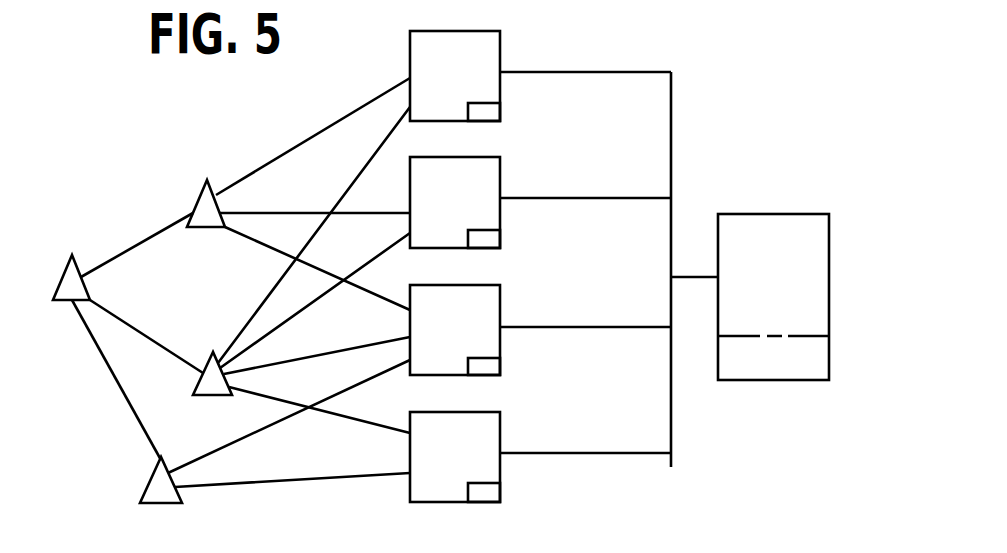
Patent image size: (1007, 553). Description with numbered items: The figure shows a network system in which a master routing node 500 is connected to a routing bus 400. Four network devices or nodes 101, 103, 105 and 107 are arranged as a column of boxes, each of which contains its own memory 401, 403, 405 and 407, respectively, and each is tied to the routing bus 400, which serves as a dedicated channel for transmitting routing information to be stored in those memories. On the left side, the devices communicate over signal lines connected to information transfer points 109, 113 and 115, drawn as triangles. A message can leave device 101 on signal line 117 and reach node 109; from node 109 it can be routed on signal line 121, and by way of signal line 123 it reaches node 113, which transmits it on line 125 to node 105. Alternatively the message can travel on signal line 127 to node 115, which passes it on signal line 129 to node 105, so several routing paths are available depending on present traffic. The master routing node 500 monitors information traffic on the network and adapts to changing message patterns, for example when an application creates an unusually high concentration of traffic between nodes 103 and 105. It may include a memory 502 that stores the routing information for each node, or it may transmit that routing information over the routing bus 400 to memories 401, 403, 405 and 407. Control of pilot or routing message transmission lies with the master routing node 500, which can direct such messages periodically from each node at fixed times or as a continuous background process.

The device 101 is at (490, 44).
The device 103 is at (490, 177).
The device 105 is at (490, 303).
The device 107 is at (490, 430).
The memory 401 is at (487, 112).
The memory 403 is at (487, 240).
The memory 405 is at (487, 367).
The memory 407 is at (487, 493).
The information transfer point 109 is at (197, 186).
The information transfer point 113 is at (202, 396).
The information transfer point 115 is at (147, 478).
The signal line 117 is at (238, 187).
The signal line 121 is at (133, 247).
The signal line 123 is at (141, 333).
The signal line 125 is at (263, 368).
The signal line 127 is at (123, 412).
The signal line 129 is at (282, 425).
The routing bus 400 is at (671, 428).
The master routing node 500 is at (853, 270).
The memory 502 is at (853, 352).